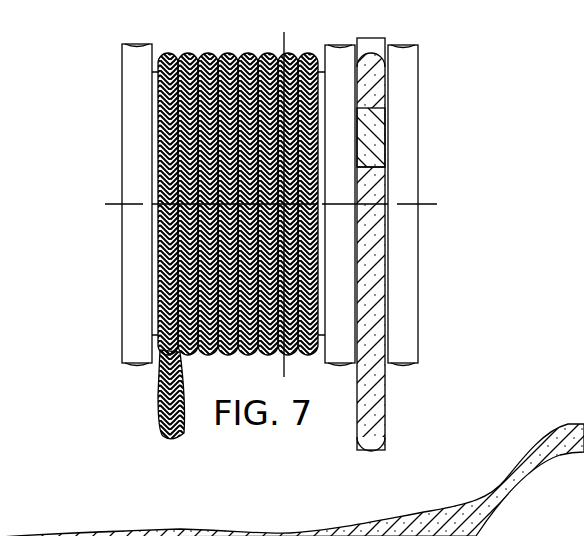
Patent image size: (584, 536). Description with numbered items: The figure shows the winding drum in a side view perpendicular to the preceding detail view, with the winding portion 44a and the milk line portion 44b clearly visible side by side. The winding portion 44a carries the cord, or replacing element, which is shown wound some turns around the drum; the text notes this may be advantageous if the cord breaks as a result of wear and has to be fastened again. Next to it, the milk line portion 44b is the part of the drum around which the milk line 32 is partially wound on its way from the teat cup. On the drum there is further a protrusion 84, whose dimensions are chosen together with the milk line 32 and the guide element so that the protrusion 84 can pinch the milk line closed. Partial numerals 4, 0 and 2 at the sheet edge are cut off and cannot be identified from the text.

The winding drum portion 44a is at (177, 276).
The milk line portion 44b is at (434, 272).
The protrusion 84 is at (371, 138).
The milk line 32 is at (368, 390).
The rod 4 is at (134, 172).
The braid tail 0 is at (165, 385).
The partial numeral 2 is at (3, 468).